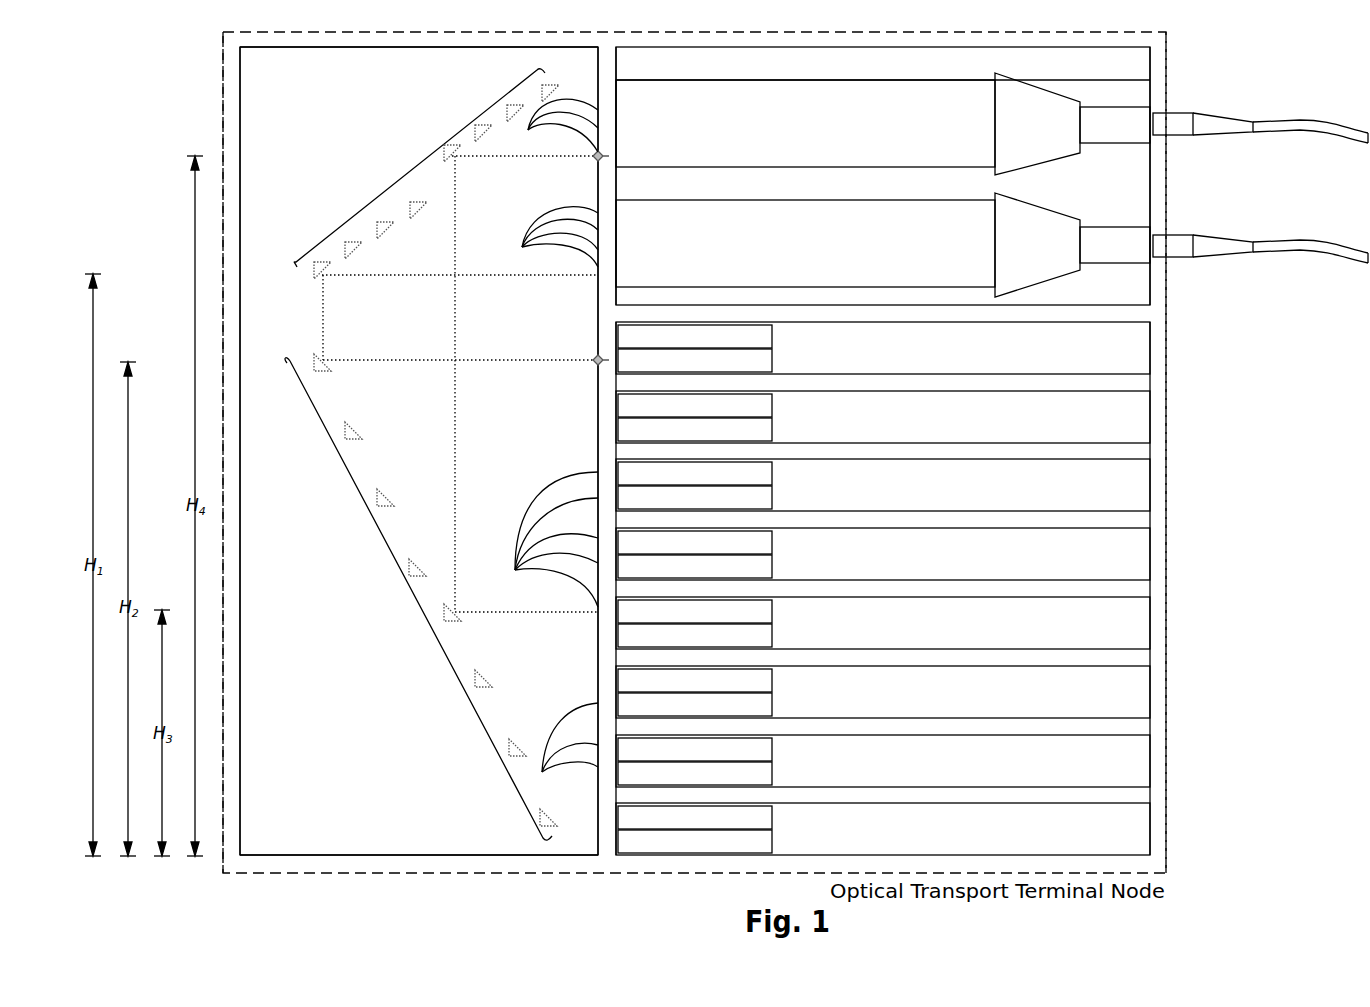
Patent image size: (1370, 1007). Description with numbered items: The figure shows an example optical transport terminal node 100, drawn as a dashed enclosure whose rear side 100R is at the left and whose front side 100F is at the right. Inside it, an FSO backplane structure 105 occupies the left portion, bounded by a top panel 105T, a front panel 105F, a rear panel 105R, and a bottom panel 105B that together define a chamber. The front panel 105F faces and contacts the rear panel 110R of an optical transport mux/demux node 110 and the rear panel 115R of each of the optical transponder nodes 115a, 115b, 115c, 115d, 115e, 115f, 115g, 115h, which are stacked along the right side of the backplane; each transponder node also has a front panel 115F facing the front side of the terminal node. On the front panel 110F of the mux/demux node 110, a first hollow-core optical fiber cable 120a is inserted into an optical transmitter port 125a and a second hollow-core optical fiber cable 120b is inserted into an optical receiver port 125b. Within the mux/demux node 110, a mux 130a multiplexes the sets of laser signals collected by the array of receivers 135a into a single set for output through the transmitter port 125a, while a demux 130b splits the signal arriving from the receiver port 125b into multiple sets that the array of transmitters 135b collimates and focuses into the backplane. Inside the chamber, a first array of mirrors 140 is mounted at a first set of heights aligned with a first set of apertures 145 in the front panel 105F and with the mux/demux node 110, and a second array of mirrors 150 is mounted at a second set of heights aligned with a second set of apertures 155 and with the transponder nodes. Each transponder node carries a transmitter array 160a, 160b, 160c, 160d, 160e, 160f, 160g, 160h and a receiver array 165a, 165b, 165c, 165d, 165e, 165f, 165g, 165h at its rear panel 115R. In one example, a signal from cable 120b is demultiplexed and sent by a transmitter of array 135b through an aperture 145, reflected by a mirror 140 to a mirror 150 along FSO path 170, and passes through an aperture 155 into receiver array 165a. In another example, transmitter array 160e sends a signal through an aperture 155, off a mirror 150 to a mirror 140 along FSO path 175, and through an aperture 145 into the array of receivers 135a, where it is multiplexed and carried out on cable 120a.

The optical transport terminal node 100 is at (195, 898).
The rear side of optical transport terminal node 100R is at (203, 70).
The front side of optical transport terminal node 100F is at (1183, 426).
The FSO backplane structure 105 is at (419, 451).
The top panel 105T is at (252, 58).
The front panel 105F is at (590, 300).
The rear panel 105R is at (252, 645).
The bottom panel 105B is at (448, 840).
The optical transport mux/demux node 110 is at (883, 176).
The rear panel of optical transport mux/demux node 110R is at (630, 175).
The front panel of optical transport mux/demux node 110F is at (1143, 172).
The optical transponder node 115a is at (883, 348).
The optical transponder node 115b is at (883, 417).
The optical transponder node 115c is at (883, 485).
The optical transponder node 115d is at (883, 554).
The optical transponder node 115e is at (883, 623).
The optical transponder node 115f is at (883, 692).
The optical transponder node 115g is at (883, 761).
The optical transponder node 115h is at (883, 829).
The front panel of optical transponder node 115F is at (1160, 343).
The rear panel of optical transponder node 115R is at (605, 858).
The first hollow-core optical fiber cable 120a is at (1238, 100).
The second hollow-core optical fiber cable 120b is at (1238, 220).
The optical transmitter port 125a is at (1156, 140).
The optical receiver port 125b is at (1156, 262).
The mux 130a is at (1072, 124).
The demux 130b is at (1072, 245).
The array of receivers 135a is at (805, 123).
The array of transmitters 135b is at (805, 243).
The first array of mirrors 140 is at (412, 166).
The first set of apertures 145 is at (548, 185).
The second array of mirrors 150 is at (408, 612).
The second set of apertures 155 is at (545, 632).
The transmitter array 160a is at (695, 336).
The transmitter array 160b is at (695, 405).
The transmitter array 160c is at (695, 473).
The transmitter array 160d is at (695, 542).
The transmitter array 160e is at (695, 611).
The transmitter array 160f is at (695, 680).
The transmitter array 160g is at (695, 749).
The transmitter array 160h is at (695, 817).
The receiver array 165a is at (695, 360).
The receiver array 165b is at (695, 429).
The receiver array 165c is at (695, 497).
The receiver array 165d is at (695, 566).
The receiver array 165e is at (695, 635).
The receiver array 165f is at (695, 704).
The receiver array 165g is at (695, 773).
The receiver array 165h is at (695, 841).
The FSO path 170 is at (330, 310).
The FSO path 175 is at (462, 402).